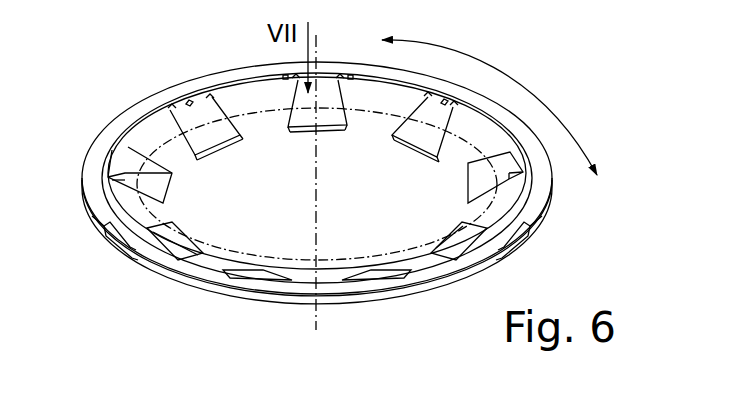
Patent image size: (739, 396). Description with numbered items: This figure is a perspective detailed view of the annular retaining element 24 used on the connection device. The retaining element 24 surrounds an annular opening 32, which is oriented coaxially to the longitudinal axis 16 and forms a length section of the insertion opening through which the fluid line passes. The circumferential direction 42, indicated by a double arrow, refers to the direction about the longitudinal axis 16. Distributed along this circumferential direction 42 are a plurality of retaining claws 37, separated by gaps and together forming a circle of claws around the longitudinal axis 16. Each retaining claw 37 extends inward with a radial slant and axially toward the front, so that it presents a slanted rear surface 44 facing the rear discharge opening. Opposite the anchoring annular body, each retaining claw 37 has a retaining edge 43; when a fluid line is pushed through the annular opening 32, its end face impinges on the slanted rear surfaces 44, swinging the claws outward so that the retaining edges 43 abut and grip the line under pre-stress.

The longitudinal axis 16 is at (316, 38).
The retaining element 24 is at (173, 275).
The annular opening 32 is at (297, 243).
The retaining claws 37 is at (158, 183).
The circumferential direction 42 is at (530, 85).
The retaining edge 43 is at (467, 190).
The slanted rear surface 44 is at (142, 173).